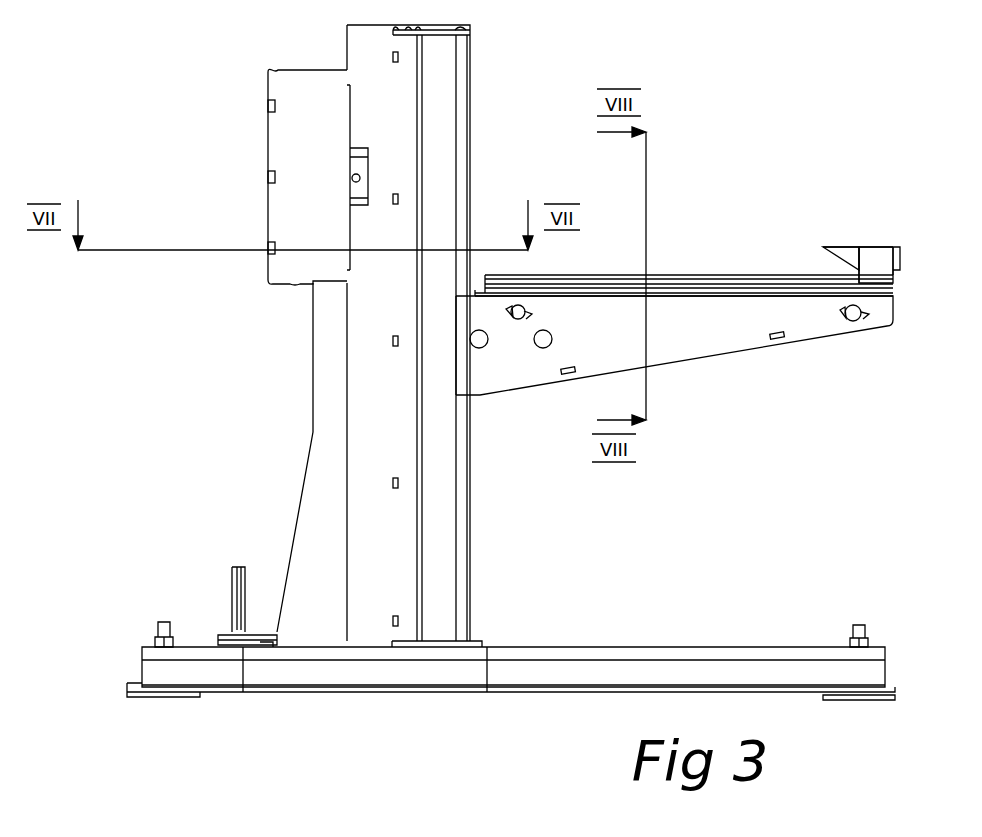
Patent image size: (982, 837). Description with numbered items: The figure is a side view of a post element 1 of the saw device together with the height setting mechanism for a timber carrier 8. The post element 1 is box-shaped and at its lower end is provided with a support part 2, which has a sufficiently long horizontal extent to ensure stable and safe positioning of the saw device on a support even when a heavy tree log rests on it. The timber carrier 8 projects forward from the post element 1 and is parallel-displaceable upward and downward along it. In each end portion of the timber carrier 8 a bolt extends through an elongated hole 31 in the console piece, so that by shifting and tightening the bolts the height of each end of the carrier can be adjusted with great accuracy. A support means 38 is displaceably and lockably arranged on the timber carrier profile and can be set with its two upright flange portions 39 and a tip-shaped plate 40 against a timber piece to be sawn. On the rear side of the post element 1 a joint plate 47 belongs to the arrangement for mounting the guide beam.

The post element 1 is at (505, 523).
The support part 2 is at (727, 667).
The timber carrier 8 is at (710, 243).
The elongated hole 31 is at (866, 309).
The support means 38 is at (850, 228).
The upright flange portions 39 is at (882, 257).
The tip-shaped plate 40 is at (843, 255).
The joint plate 47 is at (300, 150).